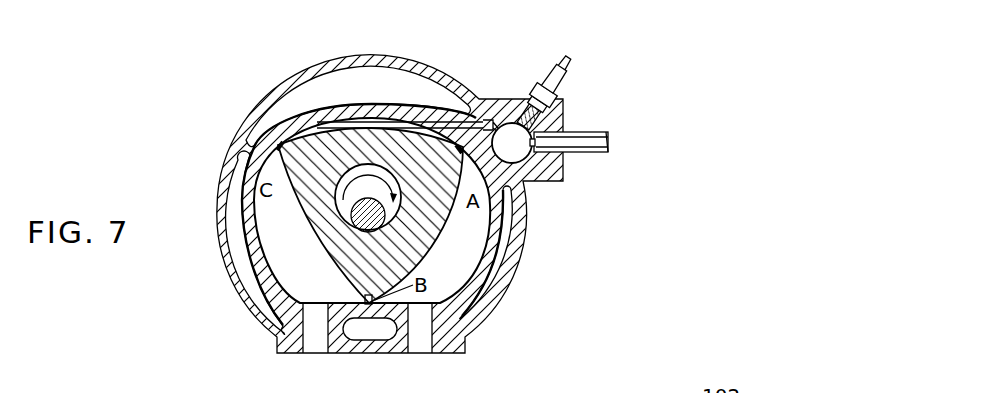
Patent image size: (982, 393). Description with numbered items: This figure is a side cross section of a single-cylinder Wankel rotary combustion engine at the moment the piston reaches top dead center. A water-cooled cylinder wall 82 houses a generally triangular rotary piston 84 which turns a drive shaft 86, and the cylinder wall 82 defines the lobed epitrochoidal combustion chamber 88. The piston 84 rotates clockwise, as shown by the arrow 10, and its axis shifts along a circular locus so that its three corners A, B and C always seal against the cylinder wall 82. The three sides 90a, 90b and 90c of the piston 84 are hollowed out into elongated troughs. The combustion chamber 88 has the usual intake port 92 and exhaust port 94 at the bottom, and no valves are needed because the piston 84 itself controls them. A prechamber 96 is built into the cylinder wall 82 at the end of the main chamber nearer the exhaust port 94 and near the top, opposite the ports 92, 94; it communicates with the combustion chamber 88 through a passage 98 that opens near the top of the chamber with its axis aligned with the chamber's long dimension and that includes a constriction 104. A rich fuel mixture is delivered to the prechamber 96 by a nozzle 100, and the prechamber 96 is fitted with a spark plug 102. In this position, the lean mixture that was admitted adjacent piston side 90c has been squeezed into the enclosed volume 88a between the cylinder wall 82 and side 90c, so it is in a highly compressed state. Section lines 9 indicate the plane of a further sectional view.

The cylinder wall 82 is at (272, 92).
The combustion chamber 88 is at (258, 209).
The enclosed volume 88a is at (323, 125).
The rotary piston 84 is at (328, 167).
The drive shaft 86 is at (368, 198).
The piston side 90a is at (481, 266).
The piston side 90b is at (308, 224).
The piston side 90c is at (356, 120).
The intake port 92 is at (315, 333).
The exhaust port 94 is at (420, 333).
The prechamber 96 is at (522, 160).
The passage 98 is at (467, 118).
The nozzle 100 is at (583, 135).
The spark plug 102 is at (547, 83).
The constriction 104 is at (493, 120).
The direction of rotation 10 is at (438, 47).
The section line 9 is at (172, 160).